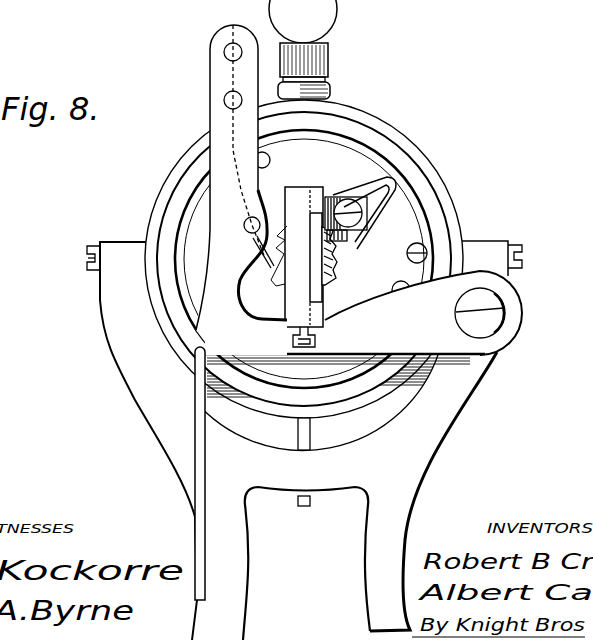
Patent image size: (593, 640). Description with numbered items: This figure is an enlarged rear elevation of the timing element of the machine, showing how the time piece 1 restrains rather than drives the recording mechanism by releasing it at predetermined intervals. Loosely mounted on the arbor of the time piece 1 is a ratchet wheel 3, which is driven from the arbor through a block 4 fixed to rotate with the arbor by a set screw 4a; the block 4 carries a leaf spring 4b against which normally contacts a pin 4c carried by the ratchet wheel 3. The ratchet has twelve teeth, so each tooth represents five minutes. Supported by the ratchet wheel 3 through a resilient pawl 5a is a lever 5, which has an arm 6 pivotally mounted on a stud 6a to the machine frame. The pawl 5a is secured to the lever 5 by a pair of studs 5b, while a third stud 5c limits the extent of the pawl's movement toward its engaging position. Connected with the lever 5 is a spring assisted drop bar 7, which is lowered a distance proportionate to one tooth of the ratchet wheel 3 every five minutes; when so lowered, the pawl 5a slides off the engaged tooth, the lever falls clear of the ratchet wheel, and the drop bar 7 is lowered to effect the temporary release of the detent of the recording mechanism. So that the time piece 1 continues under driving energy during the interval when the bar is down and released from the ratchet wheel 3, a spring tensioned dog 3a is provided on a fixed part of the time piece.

The time piece 1 is at (407, 218).
The ratchet wheel 3 is at (333, 267).
The spring tensioned dog 3a is at (332, 199).
The block 4 is at (297, 194).
The set screw 4a is at (322, 332).
The leaf spring 4b is at (323, 292).
The pin 4c is at (340, 247).
The lever 5 is at (214, 243).
The resilient pawl 5a is at (256, 251).
The studs 5b is at (226, 56).
The third stud 5c is at (262, 210).
The arm 6 is at (428, 343).
The stud 6a is at (488, 323).
The spring assisted drop bar 7 is at (195, 518).